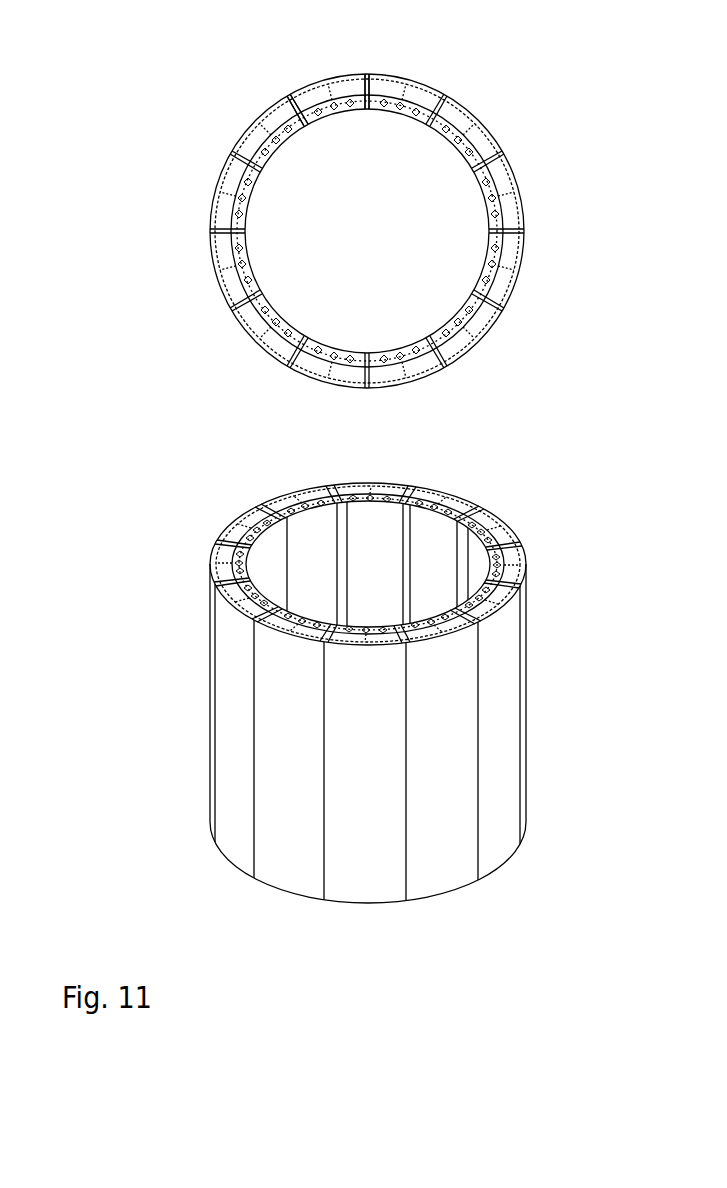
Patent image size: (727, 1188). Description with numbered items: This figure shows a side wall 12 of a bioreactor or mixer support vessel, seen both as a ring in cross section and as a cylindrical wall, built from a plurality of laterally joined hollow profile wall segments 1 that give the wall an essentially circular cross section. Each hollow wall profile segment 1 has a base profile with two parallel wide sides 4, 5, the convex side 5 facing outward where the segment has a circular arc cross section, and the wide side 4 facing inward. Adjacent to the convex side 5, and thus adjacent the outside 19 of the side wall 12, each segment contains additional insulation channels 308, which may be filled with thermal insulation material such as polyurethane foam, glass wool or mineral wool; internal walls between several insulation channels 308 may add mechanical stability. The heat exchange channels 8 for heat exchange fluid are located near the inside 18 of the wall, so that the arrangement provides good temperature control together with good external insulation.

The hollow wall profile segment 1 is at (217, 176).
The outside 19 is at (243, 143).
The convex side 5 is at (247, 132).
The insulation channel 308 is at (270, 120).
The heat exchange channel 8 is at (357, 106).
The wide side 4 is at (292, 132).
The inside 18 is at (272, 156).
The side wall 12 is at (187, 365).